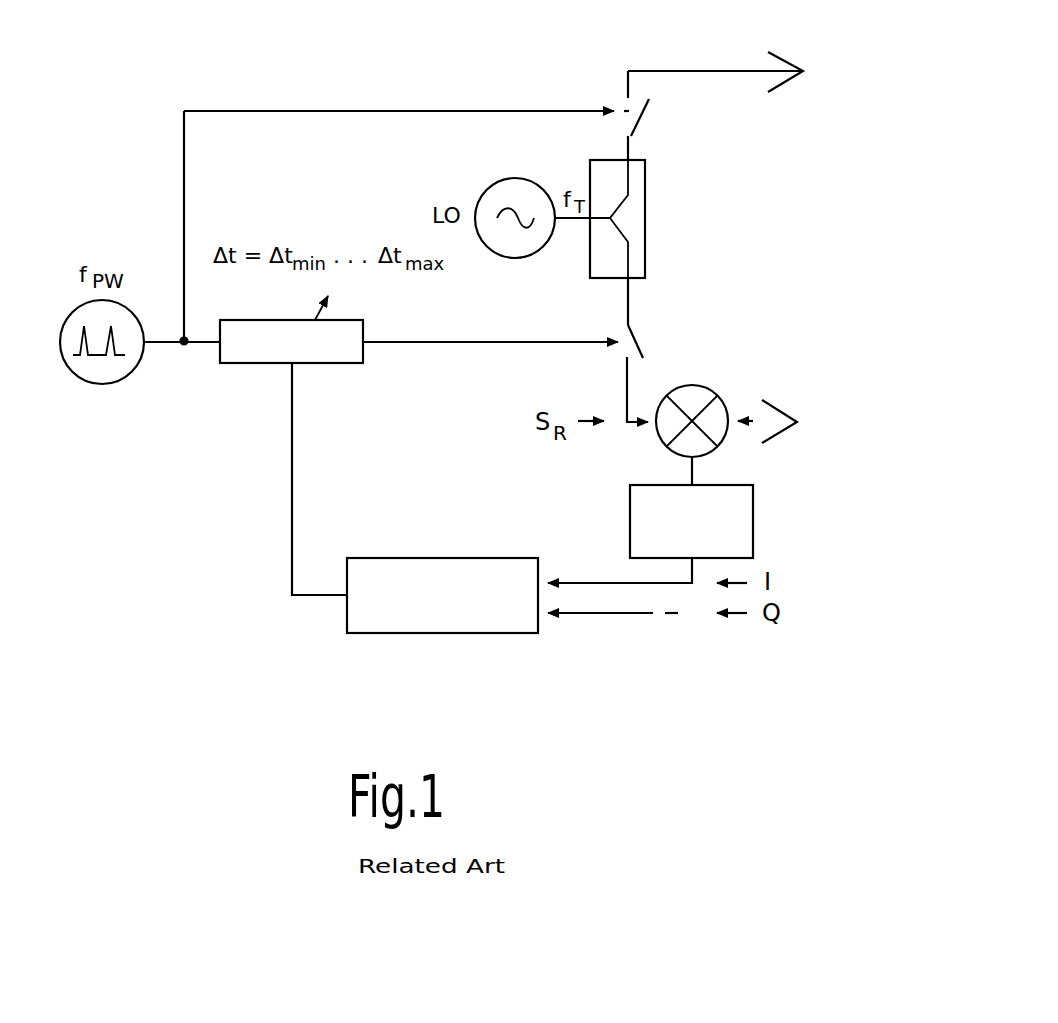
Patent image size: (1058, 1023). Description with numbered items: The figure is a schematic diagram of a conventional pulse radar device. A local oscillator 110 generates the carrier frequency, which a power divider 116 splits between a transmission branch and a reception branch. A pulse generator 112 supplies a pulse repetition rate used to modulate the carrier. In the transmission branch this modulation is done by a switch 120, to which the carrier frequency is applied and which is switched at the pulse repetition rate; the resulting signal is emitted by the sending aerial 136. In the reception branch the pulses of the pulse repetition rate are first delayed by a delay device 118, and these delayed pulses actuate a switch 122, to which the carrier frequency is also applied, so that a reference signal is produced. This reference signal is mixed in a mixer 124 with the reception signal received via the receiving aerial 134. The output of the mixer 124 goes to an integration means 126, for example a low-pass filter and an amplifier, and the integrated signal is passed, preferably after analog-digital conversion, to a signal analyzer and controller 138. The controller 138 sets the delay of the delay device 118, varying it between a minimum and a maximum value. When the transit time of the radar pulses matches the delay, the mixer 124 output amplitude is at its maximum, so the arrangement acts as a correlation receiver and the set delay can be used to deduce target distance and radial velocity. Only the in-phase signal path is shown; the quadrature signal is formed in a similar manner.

The local oscillator 110 is at (502, 193).
The pulse generator 112 is at (108, 384).
The power divider 116 is at (645, 213).
The delay device 118 is at (254, 365).
The switch 120 is at (646, 128).
The switch 122 is at (642, 330).
The mixer 124 is at (717, 393).
The integration means 126 is at (753, 520).
The receiving aerial 134 is at (800, 425).
The sending aerial 136 is at (810, 68).
The signal analyzer and controller 138 is at (432, 607).